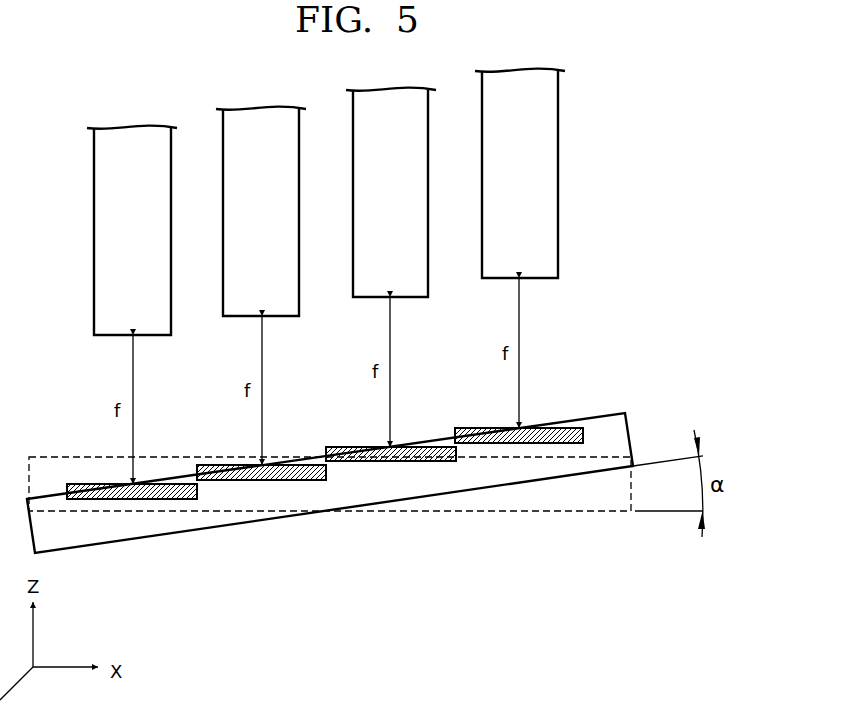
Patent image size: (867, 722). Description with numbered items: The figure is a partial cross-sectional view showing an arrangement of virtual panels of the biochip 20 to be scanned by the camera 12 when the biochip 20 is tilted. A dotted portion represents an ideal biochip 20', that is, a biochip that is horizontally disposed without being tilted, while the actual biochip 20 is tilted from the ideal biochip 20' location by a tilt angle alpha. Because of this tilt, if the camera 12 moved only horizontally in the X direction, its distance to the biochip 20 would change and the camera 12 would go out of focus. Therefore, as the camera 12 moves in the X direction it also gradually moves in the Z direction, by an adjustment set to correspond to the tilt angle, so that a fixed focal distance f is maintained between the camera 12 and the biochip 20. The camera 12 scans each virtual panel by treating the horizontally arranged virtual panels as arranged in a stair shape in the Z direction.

The camera 12 is at (103, 266).
The biochip 20 is at (361, 465).
The ideal biochip 20' is at (336, 527).